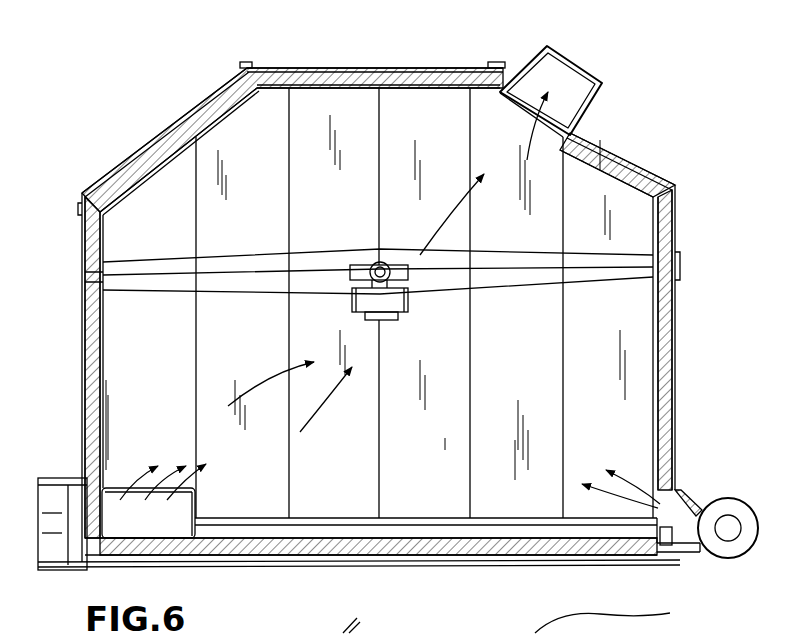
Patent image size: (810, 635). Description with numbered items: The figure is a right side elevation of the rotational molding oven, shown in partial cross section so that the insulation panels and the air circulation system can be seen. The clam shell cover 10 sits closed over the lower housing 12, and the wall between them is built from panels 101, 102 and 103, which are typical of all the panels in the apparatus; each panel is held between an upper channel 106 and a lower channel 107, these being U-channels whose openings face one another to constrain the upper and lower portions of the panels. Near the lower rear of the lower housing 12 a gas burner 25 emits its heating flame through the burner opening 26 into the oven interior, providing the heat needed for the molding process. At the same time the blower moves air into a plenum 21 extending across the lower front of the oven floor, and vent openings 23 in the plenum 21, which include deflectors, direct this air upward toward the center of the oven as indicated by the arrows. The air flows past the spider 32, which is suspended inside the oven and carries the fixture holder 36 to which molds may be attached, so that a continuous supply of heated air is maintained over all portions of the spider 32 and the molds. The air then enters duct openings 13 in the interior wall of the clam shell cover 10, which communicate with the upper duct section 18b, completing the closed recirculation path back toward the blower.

The clam shell cover 10 is at (423, 62).
The lower housing 12 is at (684, 366).
The duct openings 13 is at (566, 135).
The upper duct section 18b is at (582, 66).
The plenum 21 is at (198, 500).
The vents 23 is at (130, 488).
The gas burner 25 is at (734, 498).
The burner opening 26 is at (614, 486).
The spider 32 is at (377, 254).
The fixture holder 36 is at (406, 305).
The panel 101 is at (255, 303).
The panel 102 is at (339, 303).
The panel 103 is at (481, 303).
The upper channel 106 is at (178, 290).
The lower channel 107 is at (259, 519).